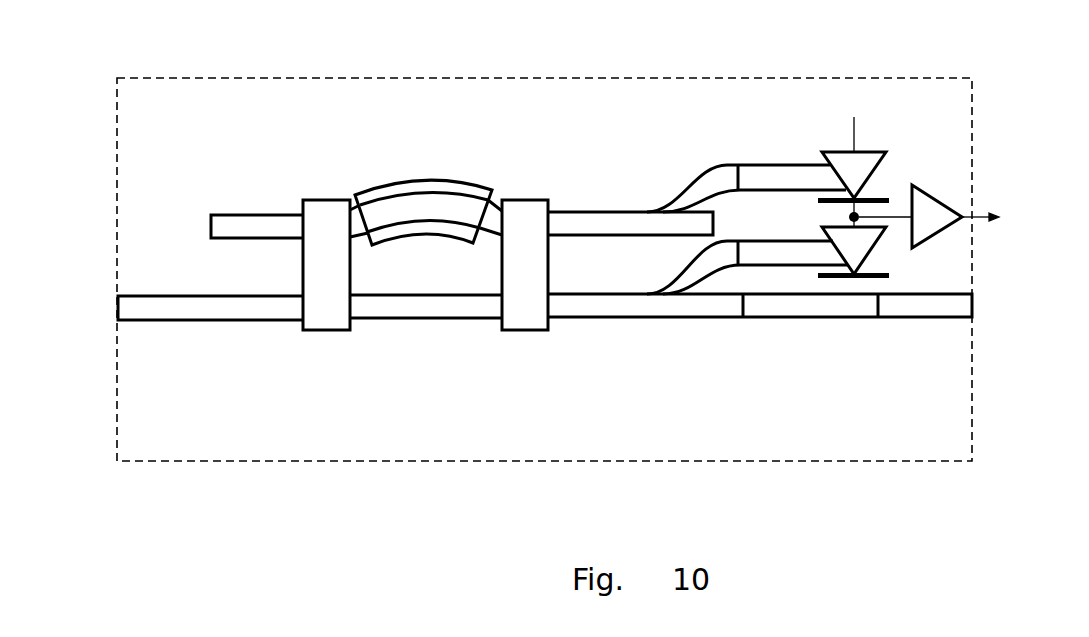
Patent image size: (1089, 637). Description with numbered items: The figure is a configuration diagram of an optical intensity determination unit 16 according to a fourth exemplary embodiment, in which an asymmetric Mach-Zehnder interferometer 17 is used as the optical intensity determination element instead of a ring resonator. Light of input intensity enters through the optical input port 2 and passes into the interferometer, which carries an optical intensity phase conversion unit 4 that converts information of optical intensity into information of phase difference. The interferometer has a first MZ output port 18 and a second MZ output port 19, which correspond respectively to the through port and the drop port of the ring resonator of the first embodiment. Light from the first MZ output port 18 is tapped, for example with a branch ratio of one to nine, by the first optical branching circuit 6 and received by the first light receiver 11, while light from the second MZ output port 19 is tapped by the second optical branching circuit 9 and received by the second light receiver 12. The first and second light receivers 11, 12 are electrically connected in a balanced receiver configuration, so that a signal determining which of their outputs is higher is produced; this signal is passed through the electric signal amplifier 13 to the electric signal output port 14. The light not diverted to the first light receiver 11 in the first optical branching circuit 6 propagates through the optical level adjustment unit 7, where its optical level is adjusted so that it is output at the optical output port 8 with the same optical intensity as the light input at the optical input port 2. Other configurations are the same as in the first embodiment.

The optical input port 2 is at (148, 310).
The optical intensity phase conversion unit 4 is at (424, 180).
The first optical branching circuit 6 is at (647, 317).
The optical level adjustment unit 7 is at (805, 315).
The optical output port 8 is at (918, 315).
The second optical branching circuit 9 is at (661, 212).
The first light receiver 11 is at (790, 243).
The second light receiver 12 is at (782, 168).
The electric signal amplifier 13 is at (933, 190).
The electric signal output port 14 is at (1004, 216).
The optical intensity determination unit 16 is at (903, 75).
The asymmetric Mach-Zehnder interferometer 17 is at (570, 337).
The first MZ output port 18 is at (592, 317).
The second MZ output port 19 is at (605, 212).